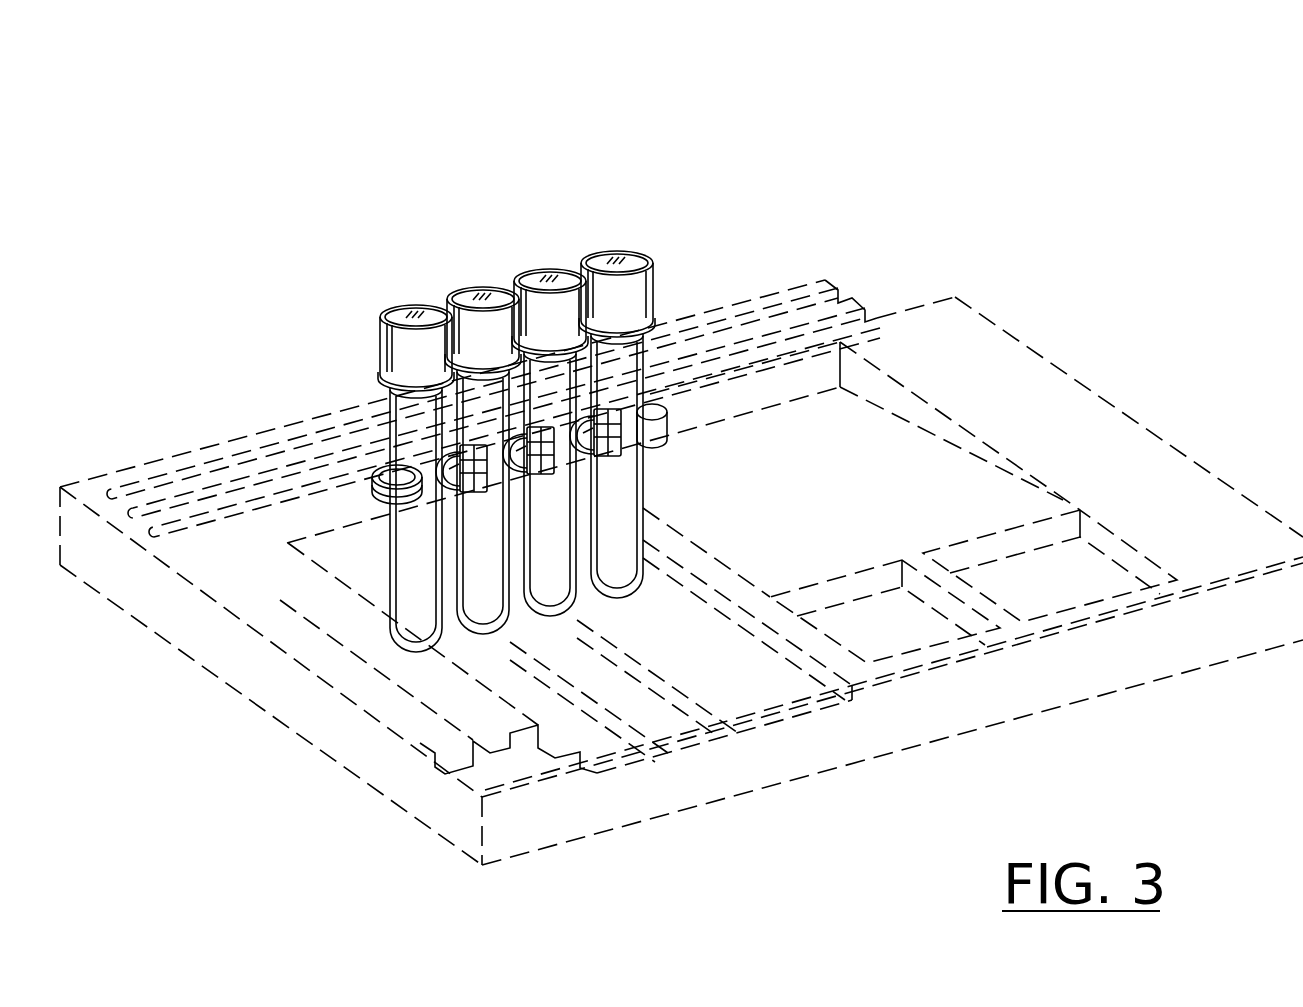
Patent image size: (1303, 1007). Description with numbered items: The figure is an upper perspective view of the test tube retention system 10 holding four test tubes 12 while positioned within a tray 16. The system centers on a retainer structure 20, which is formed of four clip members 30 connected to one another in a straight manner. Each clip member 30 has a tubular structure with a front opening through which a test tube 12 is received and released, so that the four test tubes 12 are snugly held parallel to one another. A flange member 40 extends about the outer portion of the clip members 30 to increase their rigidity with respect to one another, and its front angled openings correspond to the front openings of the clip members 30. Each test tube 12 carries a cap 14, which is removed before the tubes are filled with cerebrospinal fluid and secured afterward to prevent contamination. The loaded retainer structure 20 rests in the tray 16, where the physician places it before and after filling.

The test tube retention system 10 is at (1133, 122).
The test tube 12 is at (388, 541).
The cap 14 is at (420, 353).
The tray 16 is at (1030, 350).
The retainer structure 20 is at (660, 405).
The clip member 30 is at (387, 457).
The flange member 40 is at (368, 488).